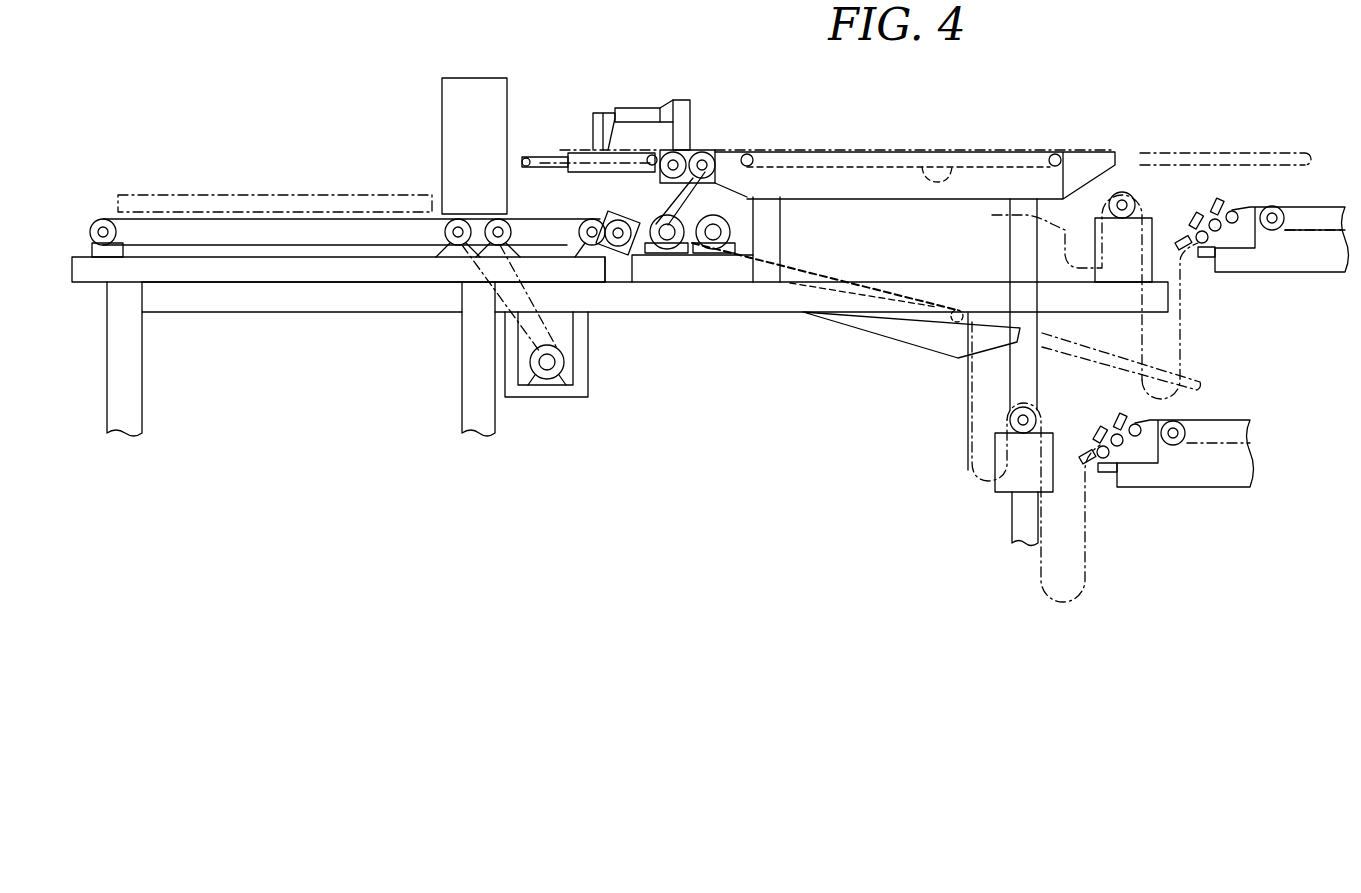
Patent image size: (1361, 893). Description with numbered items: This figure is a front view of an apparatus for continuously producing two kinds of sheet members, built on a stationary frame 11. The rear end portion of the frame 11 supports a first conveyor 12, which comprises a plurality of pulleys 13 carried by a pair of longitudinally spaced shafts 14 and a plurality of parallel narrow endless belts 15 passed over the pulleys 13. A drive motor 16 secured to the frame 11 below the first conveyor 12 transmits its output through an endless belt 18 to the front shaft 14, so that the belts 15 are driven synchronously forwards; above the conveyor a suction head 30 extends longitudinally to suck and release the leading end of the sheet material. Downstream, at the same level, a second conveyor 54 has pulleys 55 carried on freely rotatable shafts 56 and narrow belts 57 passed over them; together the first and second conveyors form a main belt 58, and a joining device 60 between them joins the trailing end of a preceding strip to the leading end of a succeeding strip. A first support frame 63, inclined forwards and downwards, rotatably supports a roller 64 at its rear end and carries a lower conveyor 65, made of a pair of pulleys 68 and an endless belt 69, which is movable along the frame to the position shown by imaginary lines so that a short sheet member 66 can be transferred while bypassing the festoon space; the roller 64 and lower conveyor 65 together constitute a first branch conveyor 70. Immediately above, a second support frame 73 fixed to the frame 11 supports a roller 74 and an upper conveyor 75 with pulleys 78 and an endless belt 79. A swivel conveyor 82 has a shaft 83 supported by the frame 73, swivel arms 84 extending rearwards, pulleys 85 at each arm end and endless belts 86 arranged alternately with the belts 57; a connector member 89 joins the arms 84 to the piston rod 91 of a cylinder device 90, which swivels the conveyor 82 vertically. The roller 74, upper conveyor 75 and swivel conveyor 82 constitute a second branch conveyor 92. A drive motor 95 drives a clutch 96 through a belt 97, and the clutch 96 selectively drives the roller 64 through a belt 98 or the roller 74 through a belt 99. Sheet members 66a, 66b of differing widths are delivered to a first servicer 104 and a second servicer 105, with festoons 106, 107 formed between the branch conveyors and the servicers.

The stationary frame 11 is at (362, 308).
The first conveyor 12 is at (233, 248).
The pulleys 13 is at (102, 219).
The shafts 14 is at (92, 223).
The narrow endless belts 15 is at (300, 247).
The drive motor 16 is at (547, 380).
The endless belt 18 is at (482, 302).
The suction head 30 is at (205, 190).
The second conveyor 54 is at (541, 250).
The pulleys 55 is at (480, 243).
The freely-rotatable shafts 56 is at (480, 212).
The narrow belts 57 is at (545, 250).
The main belt 58 is at (425, 212).
The joining device 60 is at (440, 125).
The first support frame 63 is at (922, 333).
The roller 64 is at (625, 217).
The lower conveyor 65 is at (840, 300).
The sheet member 66 is at (965, 385).
The sheet member 66a is at (960, 428).
The sheet member 66b is at (1046, 287).
The pulleys 68 is at (956, 300).
The endless belt 69 is at (872, 300).
The first branch conveyor 70 is at (815, 285).
The second support frame 73 is at (907, 190).
The roller 74 is at (700, 150).
The upper conveyor 75 is at (848, 178).
The pulleys 78 is at (1052, 153).
The endless belt 79 is at (952, 167).
The swivel conveyor 82 is at (548, 145).
The shaft 83 is at (680, 150).
The swivel arms 84 is at (600, 172).
The pulleys 85 is at (523, 155).
The endless belt 86 is at (545, 166).
The connector member 89 is at (596, 145).
The cylinder device 90 is at (640, 110).
The piston rod 91 is at (602, 120).
The second branch conveyor 92 is at (735, 117).
The drive motor 95 is at (762, 220).
The clutch 96 is at (668, 255).
The belt 97 is at (692, 255).
The belt 98 is at (700, 200).
The belt 99 is at (635, 255).
The first servicer 104 is at (1165, 490).
The second servicer 105 is at (1235, 273).
The festoon 106 is at (1090, 583).
The festoon 107 is at (1183, 322).